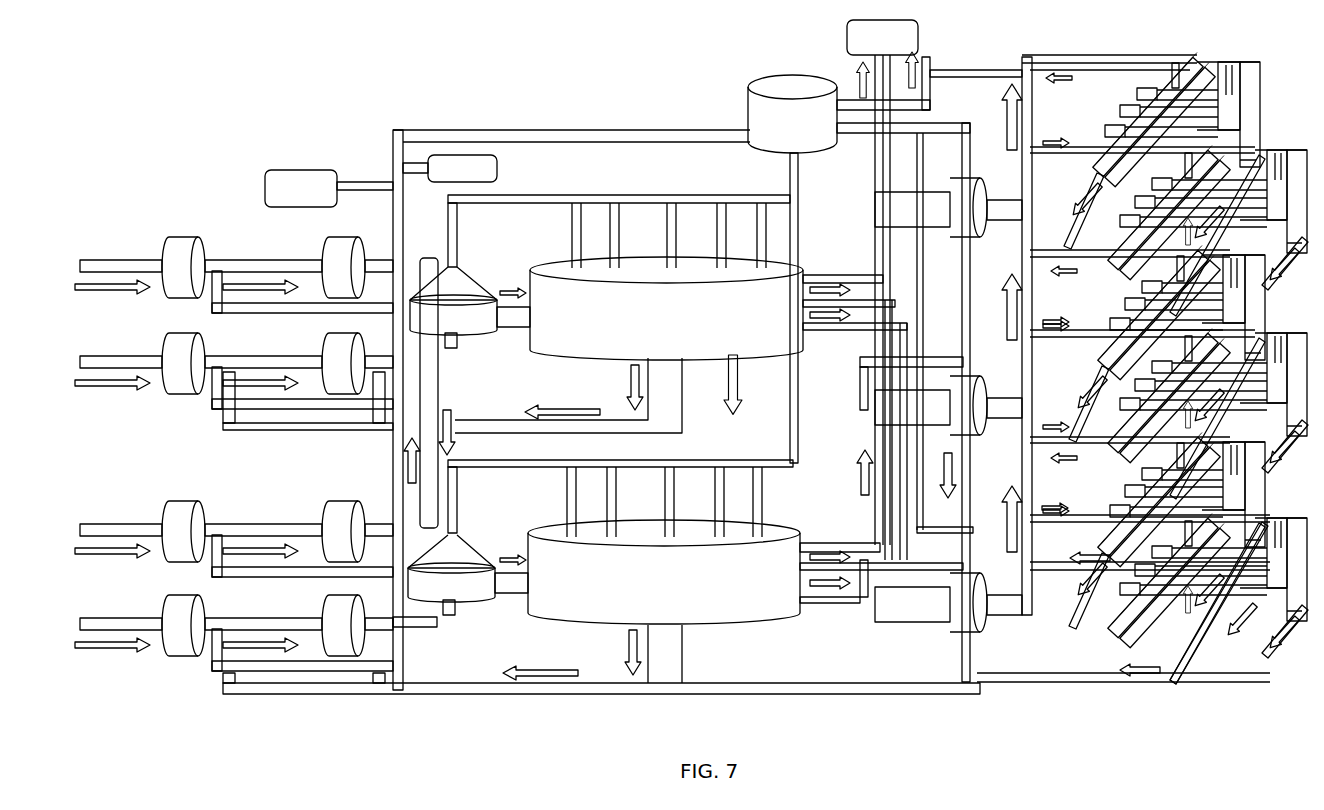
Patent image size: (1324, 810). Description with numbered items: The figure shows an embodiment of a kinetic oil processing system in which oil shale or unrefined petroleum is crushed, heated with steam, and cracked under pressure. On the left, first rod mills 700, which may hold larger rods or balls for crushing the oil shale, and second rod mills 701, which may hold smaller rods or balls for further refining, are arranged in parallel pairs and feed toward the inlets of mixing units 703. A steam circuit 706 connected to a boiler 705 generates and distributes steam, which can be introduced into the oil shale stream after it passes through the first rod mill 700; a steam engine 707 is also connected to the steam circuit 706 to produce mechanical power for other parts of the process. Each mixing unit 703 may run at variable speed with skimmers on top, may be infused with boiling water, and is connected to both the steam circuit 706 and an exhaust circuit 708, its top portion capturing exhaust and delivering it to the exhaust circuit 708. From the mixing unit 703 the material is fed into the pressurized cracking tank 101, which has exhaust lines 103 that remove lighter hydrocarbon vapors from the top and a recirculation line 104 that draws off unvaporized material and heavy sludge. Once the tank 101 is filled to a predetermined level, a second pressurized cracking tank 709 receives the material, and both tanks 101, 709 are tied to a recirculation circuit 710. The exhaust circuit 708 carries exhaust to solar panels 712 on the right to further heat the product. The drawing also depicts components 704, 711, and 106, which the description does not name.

The first rod mill 700 is at (180, 237).
The second rod mill 701 is at (330, 250).
The mixing unit 703 is at (465, 340).
The storage tank 704 is at (748, 92).
The boiler 705 is at (498, 165).
The steam circuit 706 is at (453, 136).
The steam engine 707 is at (300, 170).
The exhaust circuit 708 is at (663, 198).
The second pressurized cracking tank 709 is at (745, 572).
The recirculation circuit 710 is at (773, 693).
The inlet flow 711 is at (100, 390).
The solar panels 712 is at (847, 40).
The pressurized cracking tank 101 is at (681, 345).
The exhaust lines 103 is at (568, 225).
The recirculation line 104 is at (683, 648).
The pump 106 is at (941, 405).